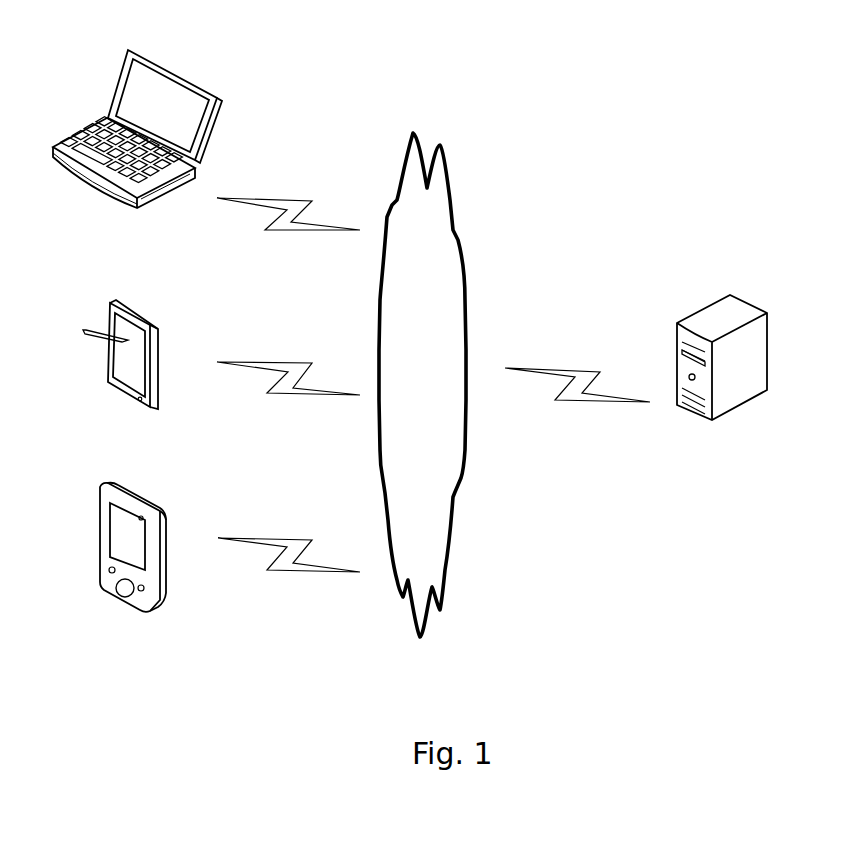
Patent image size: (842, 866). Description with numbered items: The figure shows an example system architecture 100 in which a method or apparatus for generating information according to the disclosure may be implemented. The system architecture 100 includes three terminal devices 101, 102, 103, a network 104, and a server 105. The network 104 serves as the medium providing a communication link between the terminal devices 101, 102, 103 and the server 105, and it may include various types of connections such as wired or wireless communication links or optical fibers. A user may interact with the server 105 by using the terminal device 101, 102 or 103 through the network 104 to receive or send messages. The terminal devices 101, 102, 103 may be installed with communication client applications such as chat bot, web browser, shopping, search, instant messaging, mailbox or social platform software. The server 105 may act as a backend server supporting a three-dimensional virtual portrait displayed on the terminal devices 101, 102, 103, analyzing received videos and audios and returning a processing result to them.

The system architecture 100 is at (635, 40).
The terminal device 101 is at (133, 564).
The terminal device 102 is at (120, 373).
The terminal device 103 is at (137, 148).
The network 104 is at (422, 385).
The server 105 is at (722, 380).